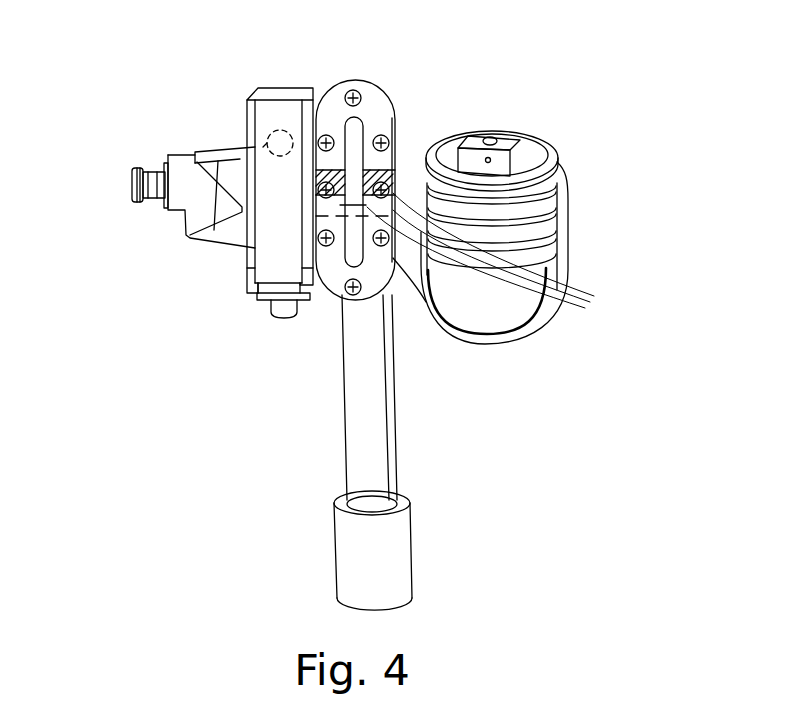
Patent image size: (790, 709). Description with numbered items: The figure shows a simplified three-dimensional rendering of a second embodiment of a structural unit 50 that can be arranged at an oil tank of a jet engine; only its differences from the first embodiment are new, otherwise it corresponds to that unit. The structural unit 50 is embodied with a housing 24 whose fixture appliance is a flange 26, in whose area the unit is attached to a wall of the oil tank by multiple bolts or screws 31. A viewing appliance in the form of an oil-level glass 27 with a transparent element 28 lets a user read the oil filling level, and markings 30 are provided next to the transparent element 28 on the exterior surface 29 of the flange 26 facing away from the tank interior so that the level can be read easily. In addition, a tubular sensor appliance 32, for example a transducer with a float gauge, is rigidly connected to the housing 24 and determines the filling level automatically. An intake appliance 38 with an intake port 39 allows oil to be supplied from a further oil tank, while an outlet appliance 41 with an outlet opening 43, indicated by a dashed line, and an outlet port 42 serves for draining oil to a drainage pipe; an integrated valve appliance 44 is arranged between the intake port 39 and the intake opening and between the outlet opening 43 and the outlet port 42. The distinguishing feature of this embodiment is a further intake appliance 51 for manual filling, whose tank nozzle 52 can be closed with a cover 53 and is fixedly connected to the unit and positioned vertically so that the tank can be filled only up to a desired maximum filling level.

The housing 24 is at (393, 165).
The flange 26 is at (370, 97).
The oil-level glass 27 is at (337, 276).
The transparent element 28 is at (352, 203).
The exterior surface 29 is at (388, 287).
The markings 30 is at (491, 263).
The screws 31 is at (393, 125).
The sensor appliance 32 is at (409, 443).
The intake appliance 38 is at (138, 215).
The intake port 39 is at (160, 158).
The outlet appliance 41 is at (246, 118).
The outlet port 42 is at (283, 312).
The outlet opening 43 is at (263, 147).
The integrated valve appliance 44 is at (262, 120).
The structural unit 50 is at (152, 82).
The further intake appliance 51 is at (573, 153).
The tank nozzle 52 is at (540, 230).
The cover 53 is at (530, 140).